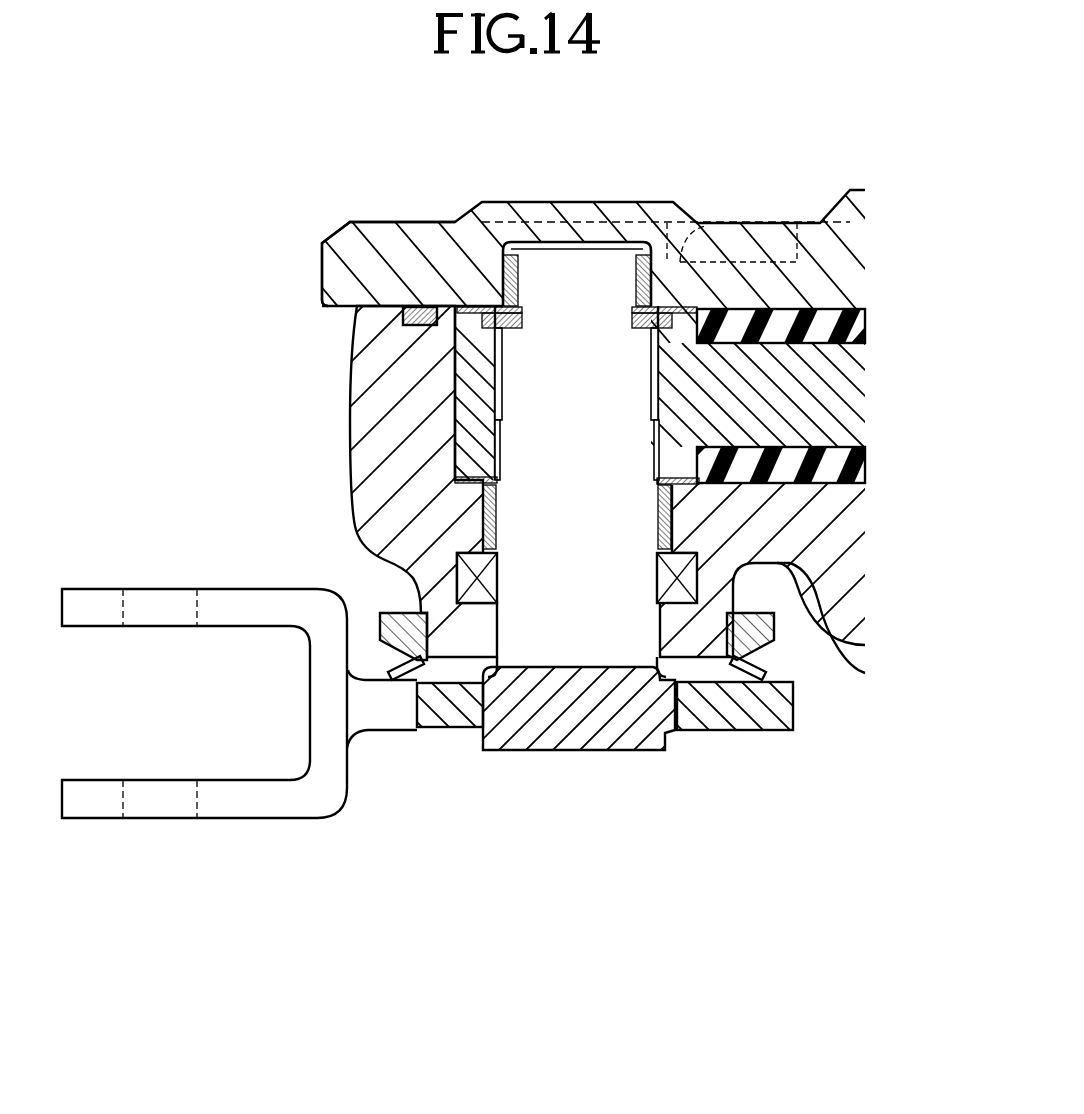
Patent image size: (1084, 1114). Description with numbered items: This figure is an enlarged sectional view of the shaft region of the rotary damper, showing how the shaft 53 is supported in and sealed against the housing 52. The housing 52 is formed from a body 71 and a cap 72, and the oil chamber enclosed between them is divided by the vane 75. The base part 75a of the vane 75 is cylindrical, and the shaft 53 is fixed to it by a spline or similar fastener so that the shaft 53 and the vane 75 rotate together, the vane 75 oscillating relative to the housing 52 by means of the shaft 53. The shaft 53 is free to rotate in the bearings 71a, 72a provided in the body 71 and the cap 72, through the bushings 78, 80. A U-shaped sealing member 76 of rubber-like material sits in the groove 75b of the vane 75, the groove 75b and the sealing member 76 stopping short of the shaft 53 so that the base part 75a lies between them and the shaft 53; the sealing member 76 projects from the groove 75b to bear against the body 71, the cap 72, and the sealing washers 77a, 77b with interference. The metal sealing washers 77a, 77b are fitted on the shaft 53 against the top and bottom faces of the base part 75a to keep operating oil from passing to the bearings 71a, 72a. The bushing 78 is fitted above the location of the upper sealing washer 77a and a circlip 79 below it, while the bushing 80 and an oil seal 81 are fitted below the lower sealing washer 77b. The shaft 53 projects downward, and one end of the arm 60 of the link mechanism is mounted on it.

The housing 52 is at (385, 449).
The shaft 53 is at (604, 642).
The arm 60 is at (276, 808).
The body 71 is at (385, 491).
The bearing 71a is at (658, 520).
The cap 72 is at (337, 275).
The bearing 72a is at (547, 247).
The vane 75 is at (835, 430).
The base part 75a is at (473, 430).
The groove 75b is at (770, 332).
The sealing member 76 is at (817, 312).
The sealing washer 77a is at (467, 292).
The sealing washer 77b is at (467, 483).
The bushing 78 is at (520, 296).
The circlip 79 is at (522, 318).
The bushing 80 is at (497, 517).
The oil seal 81 is at (488, 578).